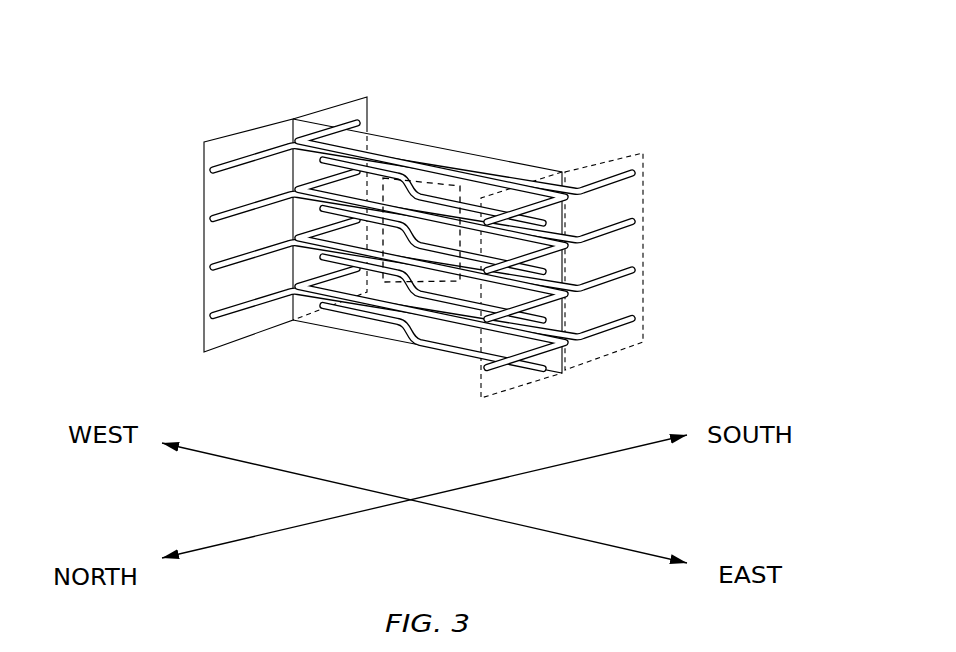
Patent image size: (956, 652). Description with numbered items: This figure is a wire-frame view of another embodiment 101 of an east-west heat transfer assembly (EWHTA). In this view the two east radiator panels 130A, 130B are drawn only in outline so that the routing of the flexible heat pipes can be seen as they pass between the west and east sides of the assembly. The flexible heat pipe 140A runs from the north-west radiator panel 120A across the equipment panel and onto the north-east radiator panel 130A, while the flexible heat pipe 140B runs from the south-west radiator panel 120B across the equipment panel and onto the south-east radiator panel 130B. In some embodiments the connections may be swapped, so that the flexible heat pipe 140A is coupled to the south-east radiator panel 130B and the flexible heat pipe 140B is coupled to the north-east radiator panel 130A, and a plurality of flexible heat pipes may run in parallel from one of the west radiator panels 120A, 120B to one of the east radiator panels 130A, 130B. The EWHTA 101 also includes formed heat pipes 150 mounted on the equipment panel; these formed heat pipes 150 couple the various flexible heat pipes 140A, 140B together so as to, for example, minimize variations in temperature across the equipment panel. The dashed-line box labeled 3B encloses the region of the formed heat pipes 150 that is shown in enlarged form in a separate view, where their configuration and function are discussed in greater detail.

The EWHTA embodiment 101 is at (276, 74).
The north-west radiator panel 120A is at (223, 145).
The south-west radiator panel 120B is at (335, 112).
The north-east radiator panel 130A is at (495, 394).
The south-east radiator panel 130B is at (632, 347).
The flexible heat pipe 140A is at (502, 187).
The flexible heat pipe 140B is at (395, 155).
The formed heat pipes 150 is at (421, 188).
The dashed-line box 3B is at (438, 285).